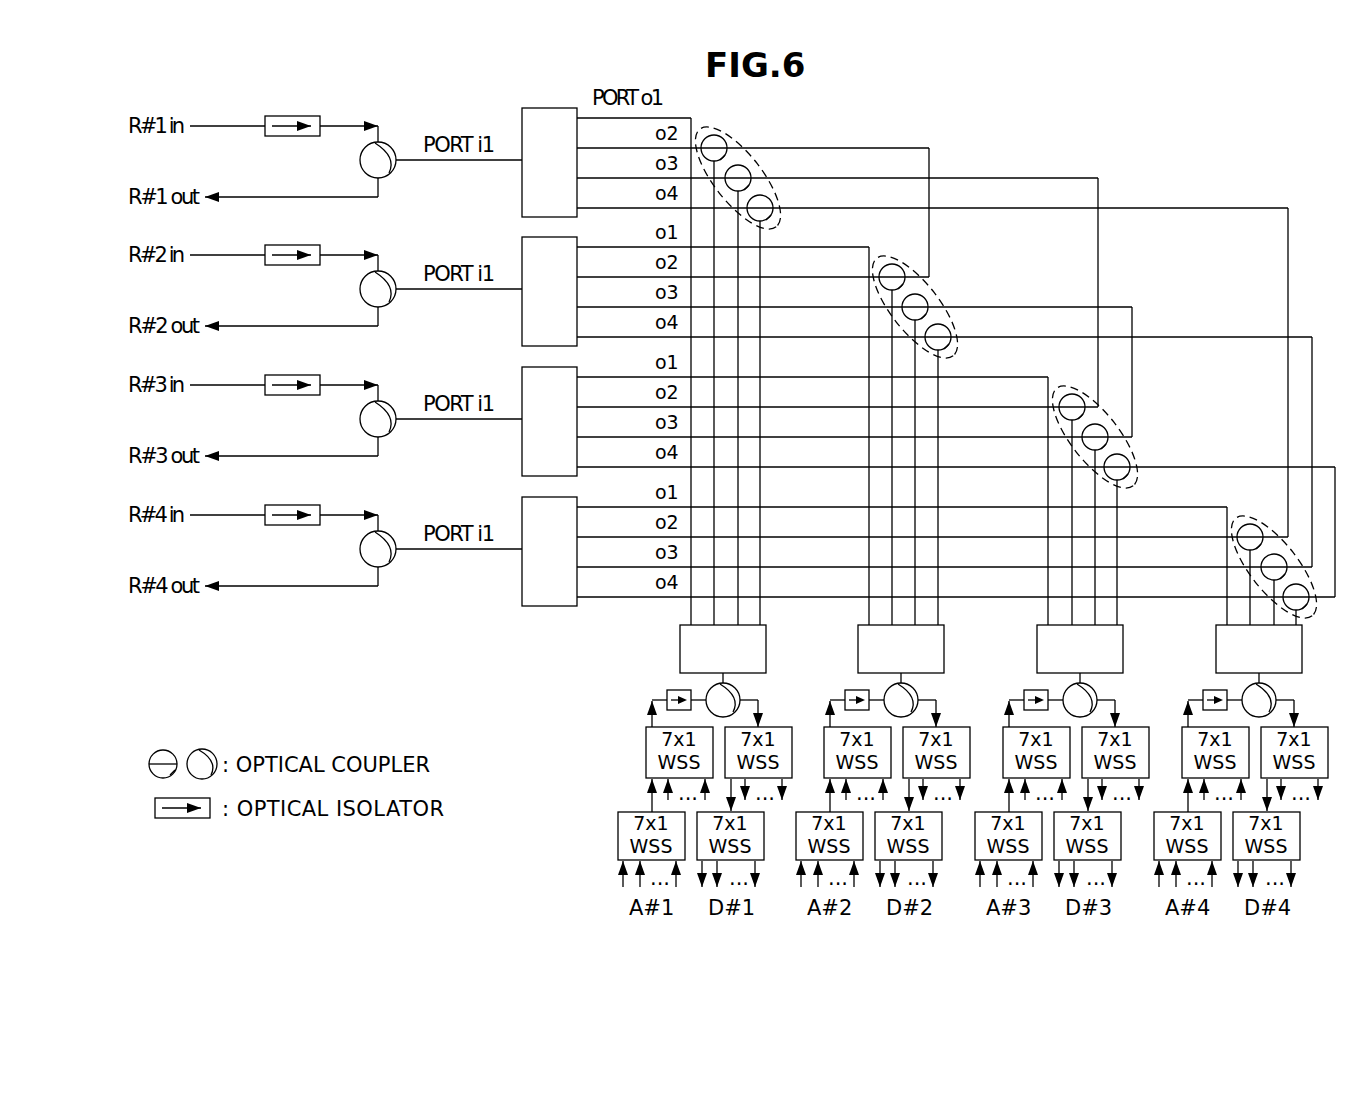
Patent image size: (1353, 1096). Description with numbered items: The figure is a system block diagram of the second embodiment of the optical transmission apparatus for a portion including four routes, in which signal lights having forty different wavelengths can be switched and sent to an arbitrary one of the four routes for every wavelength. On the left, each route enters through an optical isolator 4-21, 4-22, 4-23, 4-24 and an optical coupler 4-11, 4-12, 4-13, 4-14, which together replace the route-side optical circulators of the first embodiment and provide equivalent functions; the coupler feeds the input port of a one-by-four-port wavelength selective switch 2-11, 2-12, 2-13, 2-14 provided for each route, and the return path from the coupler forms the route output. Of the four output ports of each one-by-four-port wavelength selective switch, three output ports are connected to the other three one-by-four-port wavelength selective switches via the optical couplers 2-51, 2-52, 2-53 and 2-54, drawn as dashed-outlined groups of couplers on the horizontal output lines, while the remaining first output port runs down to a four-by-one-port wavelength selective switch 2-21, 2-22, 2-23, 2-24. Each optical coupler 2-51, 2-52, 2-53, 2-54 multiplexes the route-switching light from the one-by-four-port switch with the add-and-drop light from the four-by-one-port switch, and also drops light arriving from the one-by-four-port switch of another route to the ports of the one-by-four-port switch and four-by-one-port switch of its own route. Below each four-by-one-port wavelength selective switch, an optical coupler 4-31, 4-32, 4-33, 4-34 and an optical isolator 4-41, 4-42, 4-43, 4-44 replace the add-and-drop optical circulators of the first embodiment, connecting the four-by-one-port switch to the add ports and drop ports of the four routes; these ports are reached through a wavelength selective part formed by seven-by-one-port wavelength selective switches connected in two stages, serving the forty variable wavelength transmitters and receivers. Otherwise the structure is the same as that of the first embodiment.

The optical isolator 4-21 is at (272, 138).
The optical isolator 4-22 is at (272, 267).
The optical isolator 4-23 is at (272, 397).
The optical isolator 4-24 is at (272, 527).
The optical coupler 4-11 is at (362, 168).
The optical coupler 4-12 is at (362, 297).
The optical coupler 4-13 is at (362, 427).
The optical coupler 4-14 is at (362, 557).
The (1×4)-port wavelength selective switch 2-11 is at (522, 196).
The (1×4)-port wavelength selective switch 2-12 is at (522, 325).
The (1×4)-port wavelength selective switch 2-13 is at (522, 455).
The (1×4)-port wavelength selective switch 2-14 is at (522, 585).
The optical coupler 2-51 is at (780, 167).
The optical coupler 2-52 is at (953, 297).
The optical coupler 2-53 is at (1134, 427).
The optical coupler 2-54 is at (1242, 513).
The (4×1)-port wavelength selective switch 2-21 is at (680, 655).
The (4×1)-port wavelength selective switch 2-22 is at (858, 640).
The (4×1)-port wavelength selective switch 2-23 is at (1037, 640).
The (4×1)-port wavelength selective switch 2-24 is at (1216, 640).
The optical isolator 4-41 is at (667, 696).
The optical isolator 4-42 is at (855, 689).
The optical isolator 4-43 is at (1034, 689).
The optical isolator 4-44 is at (1213, 689).
The optical coupler 4-31 is at (740, 694).
The optical coupler 4-32 is at (918, 694).
The optical coupler 4-33 is at (1097, 694).
The optical coupler 4-34 is at (1276, 694).